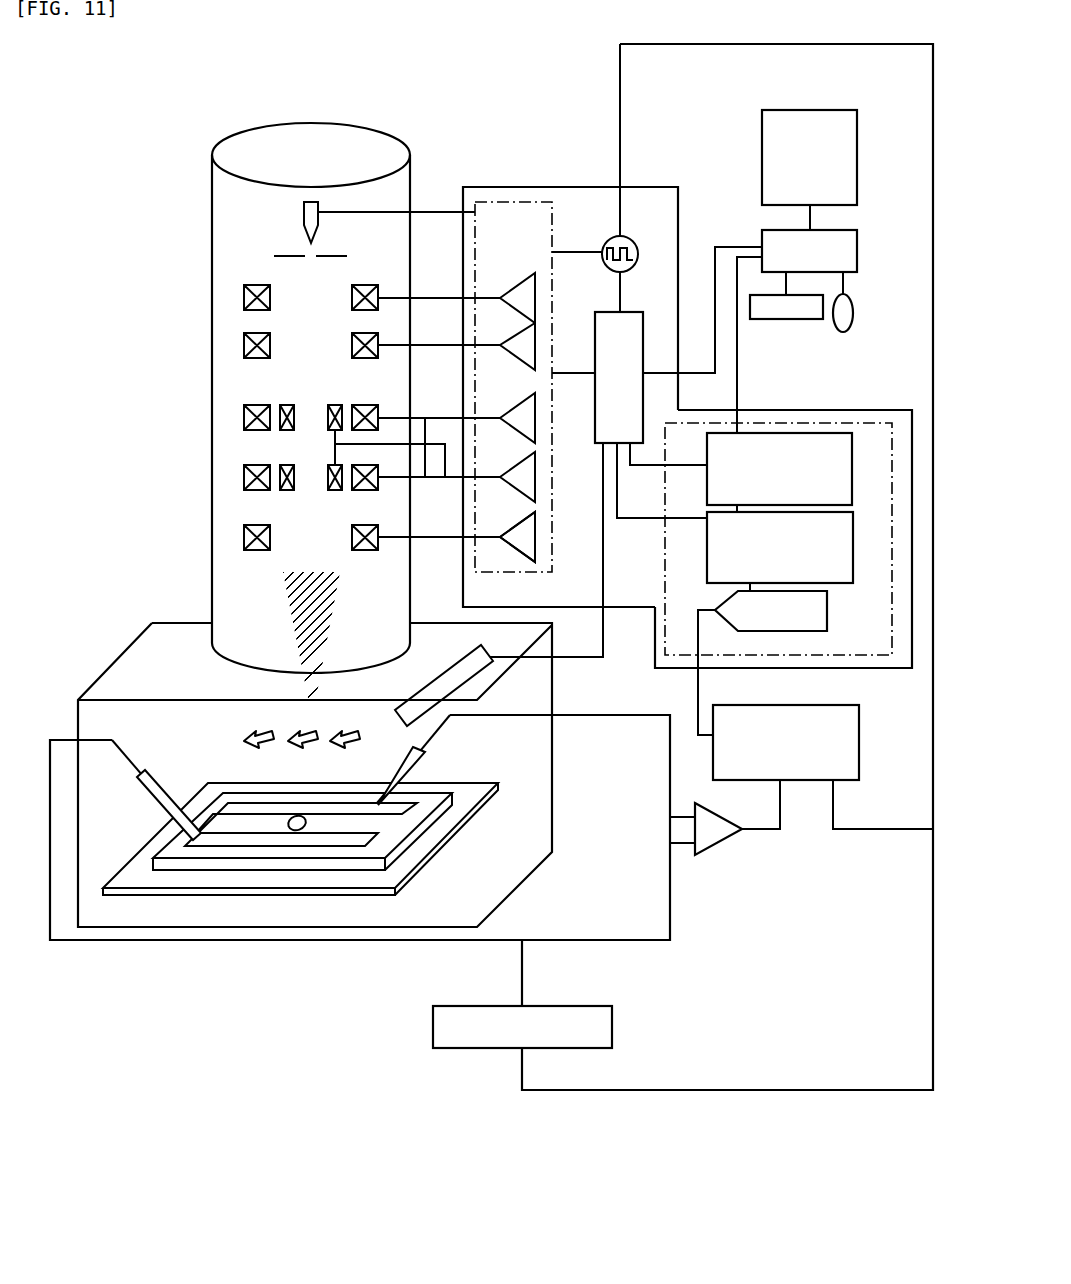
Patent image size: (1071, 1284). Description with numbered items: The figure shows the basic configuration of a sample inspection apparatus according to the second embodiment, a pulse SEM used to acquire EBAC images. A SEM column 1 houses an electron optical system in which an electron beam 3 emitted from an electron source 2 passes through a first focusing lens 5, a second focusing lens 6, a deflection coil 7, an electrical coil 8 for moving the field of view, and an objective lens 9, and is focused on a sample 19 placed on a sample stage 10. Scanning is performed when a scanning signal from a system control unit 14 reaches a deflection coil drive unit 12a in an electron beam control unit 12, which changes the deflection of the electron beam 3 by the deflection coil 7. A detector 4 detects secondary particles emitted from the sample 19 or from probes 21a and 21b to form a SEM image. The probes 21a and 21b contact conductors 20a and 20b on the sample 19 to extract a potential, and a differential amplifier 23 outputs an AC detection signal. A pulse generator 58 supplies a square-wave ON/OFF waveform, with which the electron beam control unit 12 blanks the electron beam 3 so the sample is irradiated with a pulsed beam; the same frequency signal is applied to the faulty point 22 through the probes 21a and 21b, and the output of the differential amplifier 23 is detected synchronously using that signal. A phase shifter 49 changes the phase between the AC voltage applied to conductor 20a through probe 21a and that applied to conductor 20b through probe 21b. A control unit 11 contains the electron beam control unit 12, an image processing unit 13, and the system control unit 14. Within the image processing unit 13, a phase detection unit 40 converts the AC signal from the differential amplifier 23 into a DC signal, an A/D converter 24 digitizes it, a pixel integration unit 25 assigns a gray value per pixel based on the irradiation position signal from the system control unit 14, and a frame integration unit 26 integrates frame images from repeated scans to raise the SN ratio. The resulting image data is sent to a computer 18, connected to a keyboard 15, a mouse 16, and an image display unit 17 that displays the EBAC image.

The SEM column 1 is at (352, 127).
The electron source 2 is at (308, 200).
The electron beam 3 is at (290, 600).
The detector 4 is at (470, 672).
The first focusing lens 5 is at (244, 292).
The second focusing lens 6 is at (244, 345).
The deflection coil 7 is at (244, 410).
The electrical coil for moving the field of view 8 is at (282, 468).
The objective lens 9 is at (244, 532).
The sample stage 10 is at (175, 892).
The control unit 11 is at (512, 185).
The electron beam control unit 12 is at (553, 238).
The deflection coil drive unit 12a is at (552, 455).
The image processing unit 13 is at (848, 655).
The system control unit 14 is at (645, 330).
The keyboard 15 is at (770, 320).
The mouse 16 is at (853, 307).
The image display unit 17 is at (833, 110).
The computer 18 is at (853, 232).
The sample 19 is at (227, 865).
The conductor 20a is at (403, 808).
The conductor 20b is at (348, 842).
The probe 21a is at (420, 760).
The probe 21b is at (165, 800).
The faulty point 22 is at (300, 831).
The differential amplifier 23 is at (717, 843).
The A/D converter 24 is at (820, 606).
The pixel integration unit 25 is at (843, 527).
The frame integration unit 26 is at (843, 447).
The phase detection unit 40 is at (859, 750).
The phase shifter 49 is at (488, 1050).
The pulse generator 58 is at (635, 240).